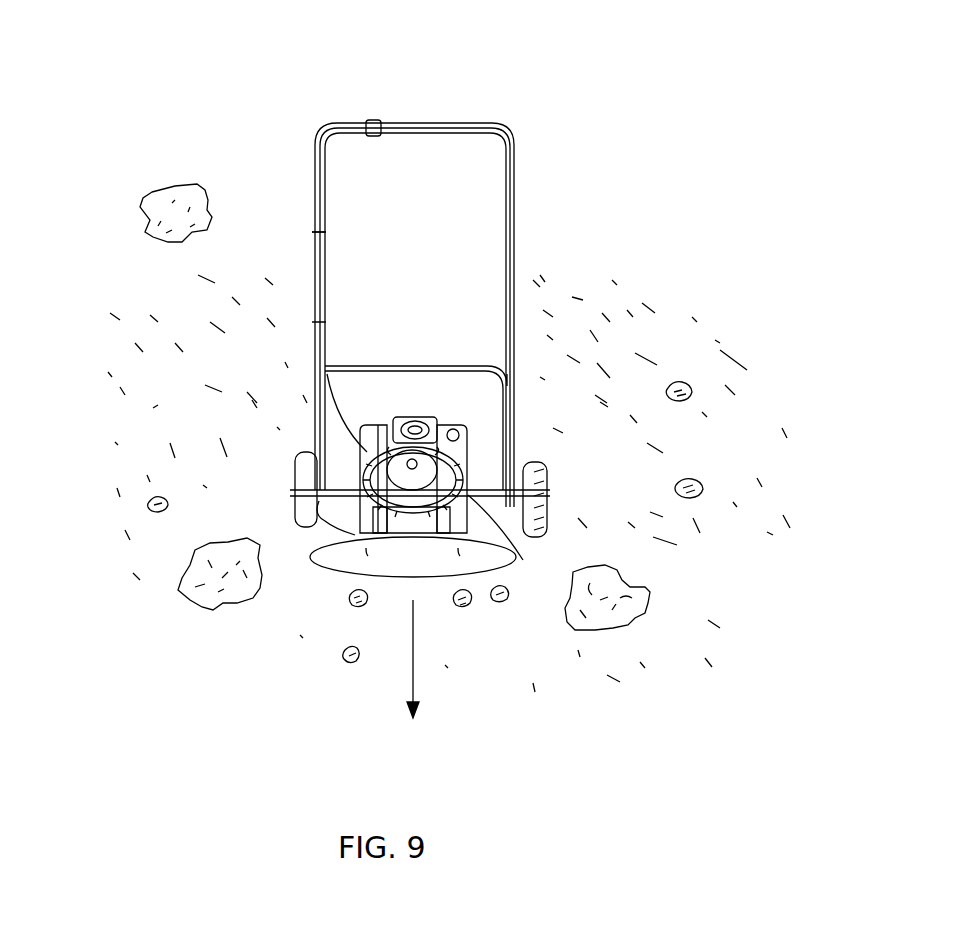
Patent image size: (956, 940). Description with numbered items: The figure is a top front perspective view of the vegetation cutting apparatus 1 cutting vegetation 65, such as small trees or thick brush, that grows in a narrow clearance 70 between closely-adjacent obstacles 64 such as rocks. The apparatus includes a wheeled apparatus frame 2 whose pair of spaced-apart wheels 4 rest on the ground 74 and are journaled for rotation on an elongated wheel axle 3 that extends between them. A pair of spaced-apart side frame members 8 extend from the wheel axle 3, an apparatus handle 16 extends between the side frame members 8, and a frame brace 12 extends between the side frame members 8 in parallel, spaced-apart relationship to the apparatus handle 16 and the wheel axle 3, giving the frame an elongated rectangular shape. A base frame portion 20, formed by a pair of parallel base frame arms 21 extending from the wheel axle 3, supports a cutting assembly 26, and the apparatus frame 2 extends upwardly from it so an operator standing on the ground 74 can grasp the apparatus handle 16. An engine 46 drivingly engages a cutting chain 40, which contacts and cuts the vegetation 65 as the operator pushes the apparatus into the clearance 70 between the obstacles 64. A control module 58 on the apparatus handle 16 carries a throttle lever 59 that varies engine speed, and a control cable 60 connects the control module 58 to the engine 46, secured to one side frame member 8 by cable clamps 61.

The vegetation cutting apparatus 1 is at (289, 87).
The wheeled apparatus frame 2 is at (516, 244).
The wheel axle 3 is at (484, 490).
The wheels 4 is at (294, 481).
The side frame members 8 is at (504, 216).
The frame brace 12 is at (460, 367).
The apparatus handle 16 is at (405, 126).
The base frame portion 20 is at (348, 522).
The base frame arms 21 is at (330, 507).
The cutting assembly 26 is at (528, 582).
The cutting chain 40 is at (344, 576).
The engine 46 is at (410, 393).
The control module 58 is at (372, 120).
The throttle lever 59 is at (376, 137).
The control cable 60 is at (326, 365).
The cable clamps 61 is at (325, 234).
The obstacles 64 is at (146, 189).
The vegetation 65 is at (356, 608).
The clearance 70 is at (240, 617).
The ground 74 is at (182, 391).